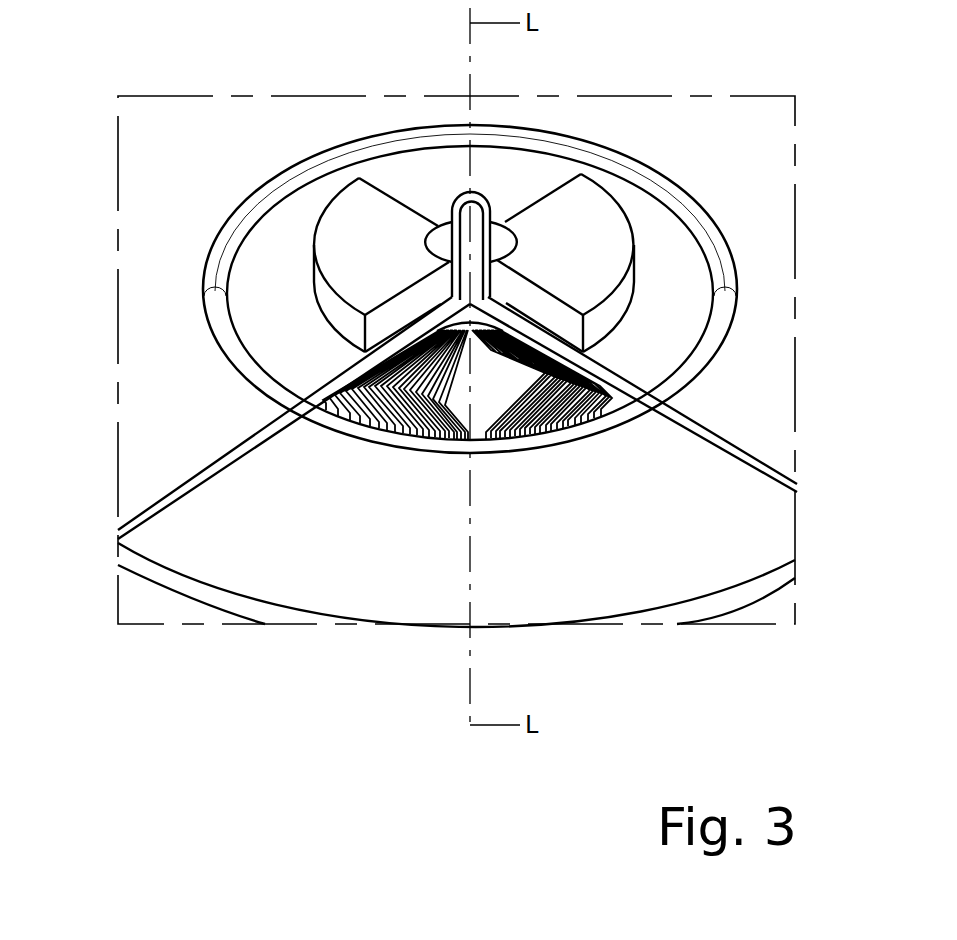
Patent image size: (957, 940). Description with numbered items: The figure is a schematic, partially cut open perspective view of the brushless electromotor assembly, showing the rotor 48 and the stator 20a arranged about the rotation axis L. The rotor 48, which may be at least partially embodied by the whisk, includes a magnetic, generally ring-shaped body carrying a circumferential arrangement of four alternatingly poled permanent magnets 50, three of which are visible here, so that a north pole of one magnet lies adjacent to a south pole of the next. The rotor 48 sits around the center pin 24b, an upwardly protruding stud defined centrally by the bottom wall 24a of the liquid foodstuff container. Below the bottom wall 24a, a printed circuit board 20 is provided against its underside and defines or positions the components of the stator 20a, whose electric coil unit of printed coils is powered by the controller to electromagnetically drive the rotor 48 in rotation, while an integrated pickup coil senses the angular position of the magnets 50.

The printed circuit board 20 is at (547, 542).
The stator 20a is at (418, 420).
The bottom wall 24a is at (172, 391).
The center pin 24b is at (487, 276).
The rotor 48 is at (566, 153).
The permanent magnet 50 is at (348, 217).